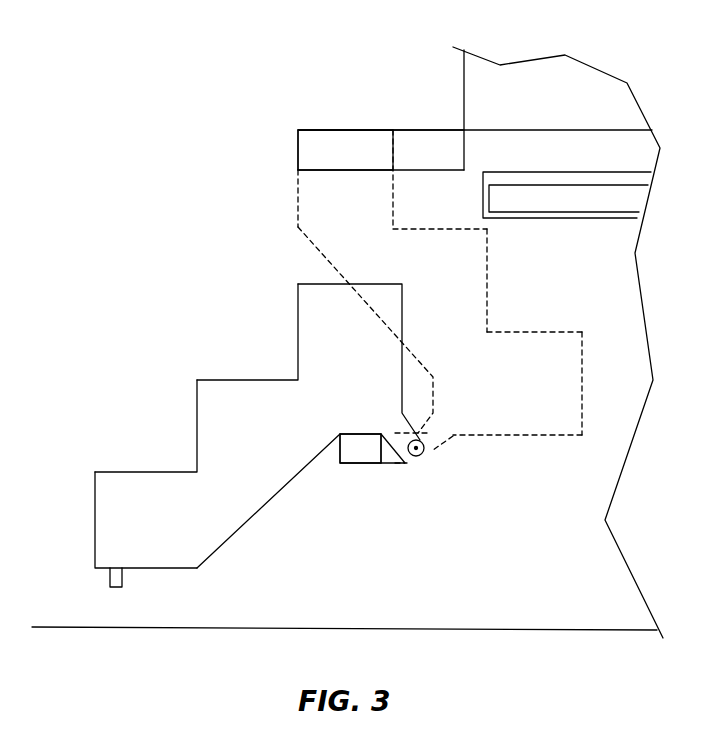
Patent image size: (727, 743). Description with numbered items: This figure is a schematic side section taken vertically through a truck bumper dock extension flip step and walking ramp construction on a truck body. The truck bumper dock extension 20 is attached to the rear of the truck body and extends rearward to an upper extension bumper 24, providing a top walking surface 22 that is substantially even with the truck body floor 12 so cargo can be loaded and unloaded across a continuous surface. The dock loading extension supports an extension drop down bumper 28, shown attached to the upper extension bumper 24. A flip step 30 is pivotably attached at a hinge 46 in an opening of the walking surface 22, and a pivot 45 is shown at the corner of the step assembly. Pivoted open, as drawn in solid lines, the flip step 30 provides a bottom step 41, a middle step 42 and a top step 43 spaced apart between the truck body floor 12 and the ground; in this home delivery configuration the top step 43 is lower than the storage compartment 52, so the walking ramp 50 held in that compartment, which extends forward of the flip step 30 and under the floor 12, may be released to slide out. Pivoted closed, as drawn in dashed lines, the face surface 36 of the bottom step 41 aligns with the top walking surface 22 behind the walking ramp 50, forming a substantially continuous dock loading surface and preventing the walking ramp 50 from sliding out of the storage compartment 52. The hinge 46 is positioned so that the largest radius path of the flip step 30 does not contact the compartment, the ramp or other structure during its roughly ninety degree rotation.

The truck body floor 12 is at (553, 130).
The truck bumper dock extension 20 is at (407, 256).
The top walking surface 22 is at (405, 130).
The upper extension bumper 24 is at (298, 142).
The extension drop down bumper 28 is at (323, 138).
The flip step 30 is at (225, 419).
The face surface 36 is at (95, 522).
The bottom step 41 is at (142, 472).
The step 42 is at (240, 380).
The top step 43 is at (298, 284).
The pivot 45 is at (423, 452).
The hinge 46 is at (415, 463).
The walking ramp 50 is at (573, 200).
The storage compartment 52 is at (518, 212).